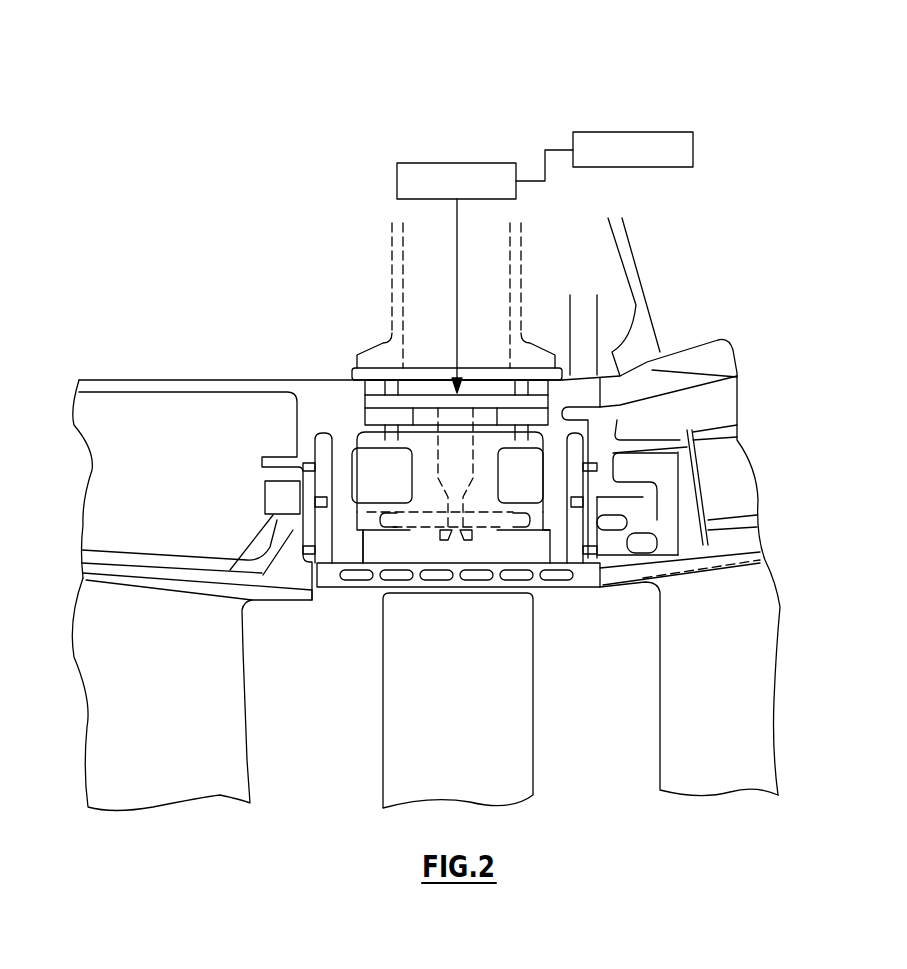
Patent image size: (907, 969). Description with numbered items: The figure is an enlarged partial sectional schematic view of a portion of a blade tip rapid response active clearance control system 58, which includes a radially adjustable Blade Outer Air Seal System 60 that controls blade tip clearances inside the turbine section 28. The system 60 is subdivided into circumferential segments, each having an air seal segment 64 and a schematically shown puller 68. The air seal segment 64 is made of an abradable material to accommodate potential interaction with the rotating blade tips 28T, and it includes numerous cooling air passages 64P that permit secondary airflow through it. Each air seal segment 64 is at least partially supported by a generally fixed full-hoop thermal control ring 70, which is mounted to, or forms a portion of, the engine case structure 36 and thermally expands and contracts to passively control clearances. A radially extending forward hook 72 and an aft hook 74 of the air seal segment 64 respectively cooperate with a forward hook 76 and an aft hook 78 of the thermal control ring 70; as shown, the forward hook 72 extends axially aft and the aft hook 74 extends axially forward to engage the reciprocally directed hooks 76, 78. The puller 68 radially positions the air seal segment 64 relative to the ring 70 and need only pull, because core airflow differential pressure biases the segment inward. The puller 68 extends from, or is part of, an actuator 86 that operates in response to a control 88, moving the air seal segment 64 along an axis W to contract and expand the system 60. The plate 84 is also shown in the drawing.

The blade tip rapid response active clearance control system 58 is at (688, 85).
The actuator 86 is at (425, 163).
The control 88 is at (693, 150).
The axis W is at (457, 233).
The mounting plate 84 is at (313, 380).
The engine case structure 36 is at (258, 368).
The turbine section 28 is at (806, 409).
The blade tips 28T is at (466, 594).
The radially adjustable Blade Outer Air Seal System (BOAS) 60 is at (330, 644).
The full-hoop thermal control ring 70 is at (345, 482).
The aft hook 74 is at (547, 520).
The forward hook 72 is at (383, 515).
The aft hook 78 is at (530, 533).
The forward hook 76 is at (353, 532).
The puller 68 is at (513, 548).
The air seal segment 64 is at (375, 583).
The cooling air passages 64P is at (388, 576).